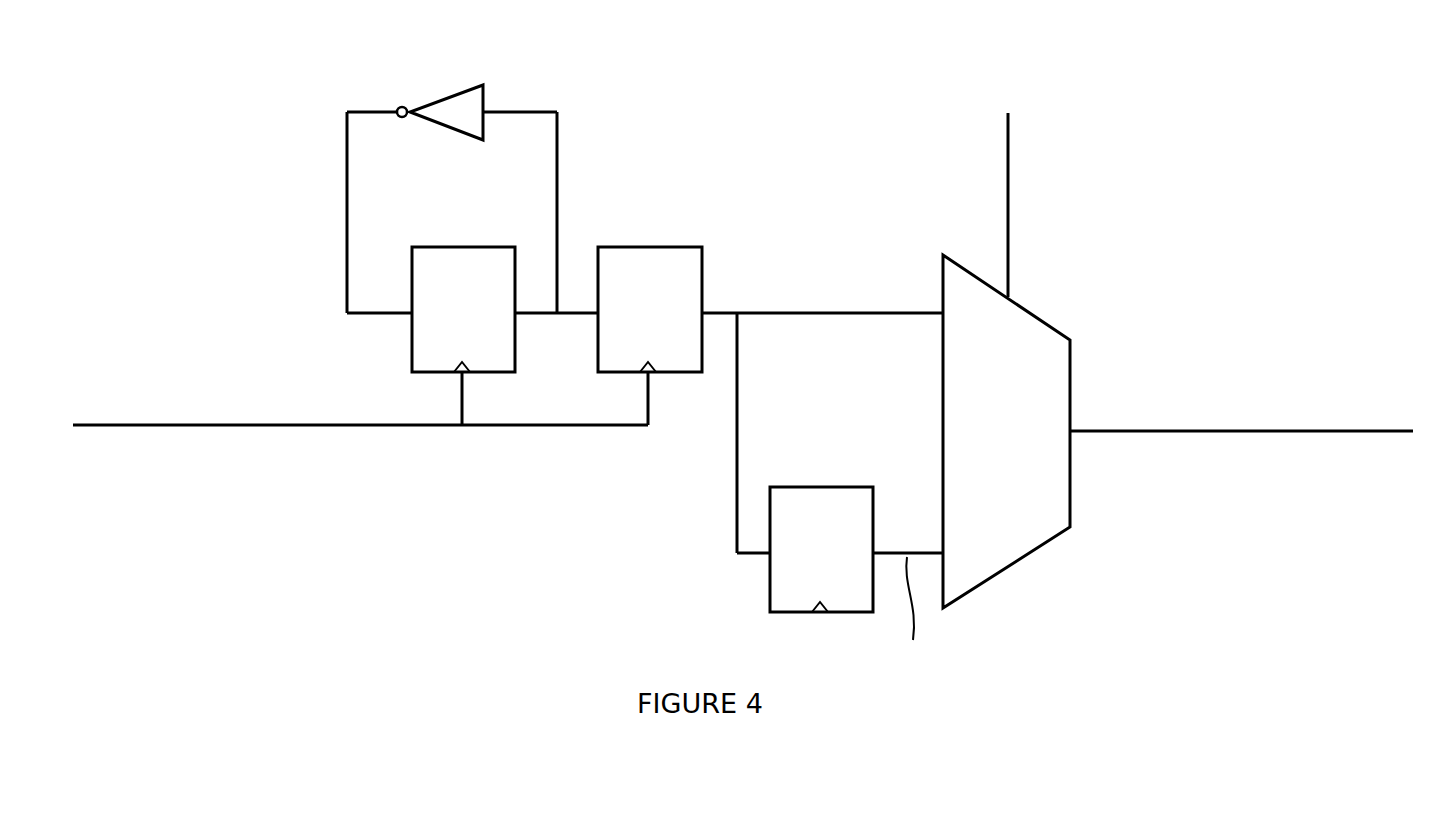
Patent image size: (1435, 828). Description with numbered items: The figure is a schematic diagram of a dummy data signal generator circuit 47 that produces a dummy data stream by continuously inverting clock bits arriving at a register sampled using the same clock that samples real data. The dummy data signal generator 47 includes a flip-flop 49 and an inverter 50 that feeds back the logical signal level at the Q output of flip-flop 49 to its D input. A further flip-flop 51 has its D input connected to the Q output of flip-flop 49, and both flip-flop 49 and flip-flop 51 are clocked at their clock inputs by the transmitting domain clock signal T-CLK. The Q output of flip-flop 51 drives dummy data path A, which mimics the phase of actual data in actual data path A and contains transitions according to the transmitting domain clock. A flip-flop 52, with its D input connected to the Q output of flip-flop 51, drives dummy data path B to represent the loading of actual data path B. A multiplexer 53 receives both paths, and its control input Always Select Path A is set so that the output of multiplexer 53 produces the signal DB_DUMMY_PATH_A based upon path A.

The dummy data signal generator circuit 47 is at (1201, 246).
The flip-flop 49 is at (472, 246).
The inverter 50 is at (447, 96).
The flip-flop 51 is at (662, 246).
The flip-flop 52 is at (848, 486).
The multiplexer 53 is at (1021, 444).